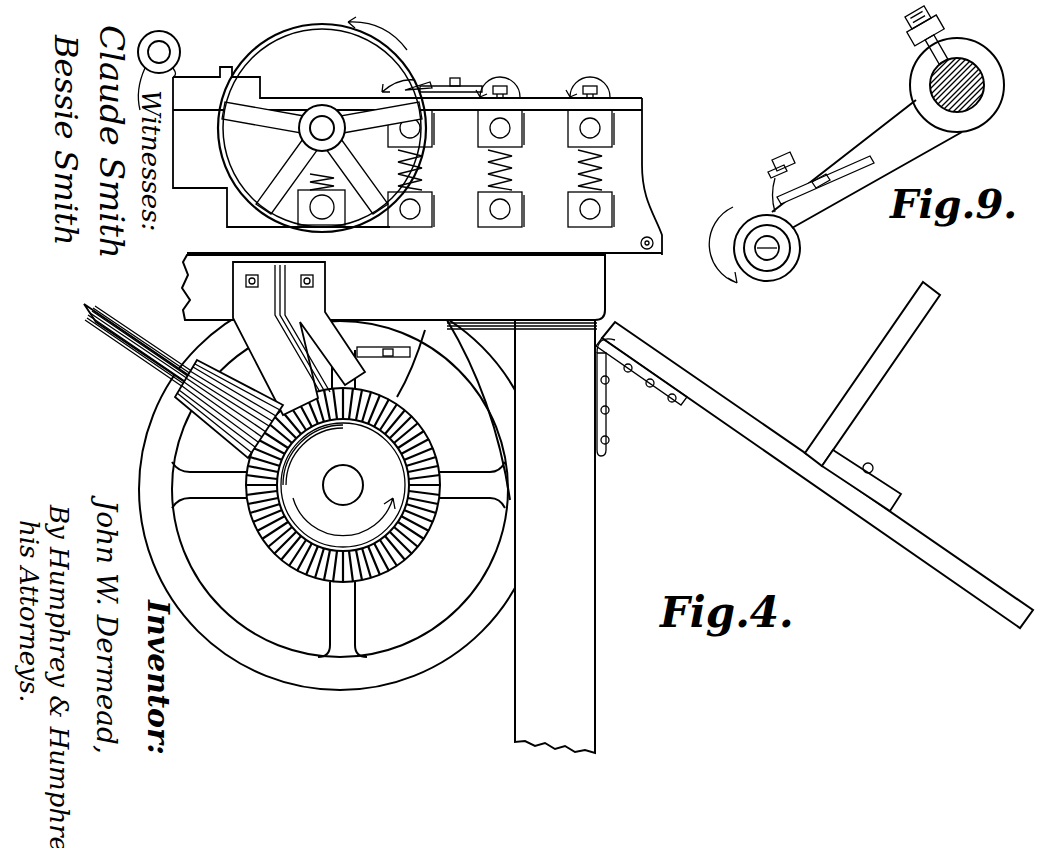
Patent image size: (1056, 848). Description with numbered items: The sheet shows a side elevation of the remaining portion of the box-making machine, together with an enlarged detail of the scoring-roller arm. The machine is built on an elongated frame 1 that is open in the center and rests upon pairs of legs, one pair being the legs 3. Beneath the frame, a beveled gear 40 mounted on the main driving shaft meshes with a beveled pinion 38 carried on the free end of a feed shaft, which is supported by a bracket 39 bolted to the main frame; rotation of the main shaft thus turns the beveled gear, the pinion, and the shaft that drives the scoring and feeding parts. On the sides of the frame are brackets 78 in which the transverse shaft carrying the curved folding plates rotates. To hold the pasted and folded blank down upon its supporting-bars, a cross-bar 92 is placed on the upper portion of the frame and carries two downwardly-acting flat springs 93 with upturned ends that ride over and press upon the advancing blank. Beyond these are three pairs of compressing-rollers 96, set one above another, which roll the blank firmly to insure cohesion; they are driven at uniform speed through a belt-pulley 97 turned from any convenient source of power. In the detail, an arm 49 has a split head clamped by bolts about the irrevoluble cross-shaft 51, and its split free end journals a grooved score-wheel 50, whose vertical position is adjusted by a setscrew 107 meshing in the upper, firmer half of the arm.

In FIG. 4, the frame 1 is at (393, 287).
In FIG. 4, the legs 3 is at (555, 536).
In FIG. 4, the beveled pinion 38 is at (243, 457).
In FIG. 4, the bracket 39 is at (293, 338).
In FIG. 4, the beveled gear 40 is at (382, 566).
In FIG. 4, the brackets 78 is at (168, 70).
In FIG. 4, the cross-bar 92 is at (465, 88).
In FIG. 4, the flat springs 93 is at (416, 82).
In FIG. 4, the compressing-rollers 96 is at (426, 95).
In FIG. 4, the belt-pulley 97 is at (322, 119).
In FIG. 9, the arms 49 is at (995, 97).
In FIG. 9, the score-wheels 50 is at (800, 232).
In FIG. 9, the cross-shaft 51 is at (985, 80).
In FIG. 9, the setscrews 107 is at (783, 155).